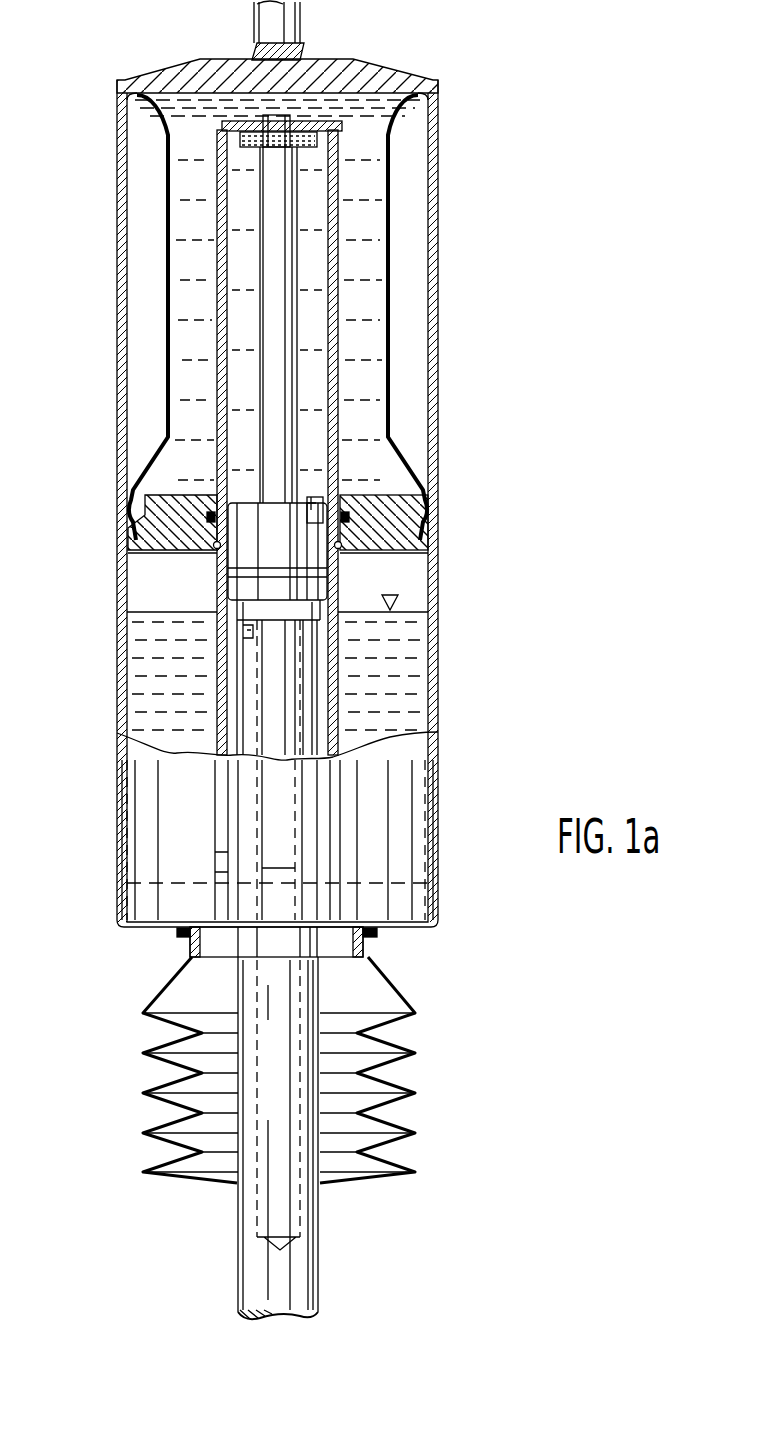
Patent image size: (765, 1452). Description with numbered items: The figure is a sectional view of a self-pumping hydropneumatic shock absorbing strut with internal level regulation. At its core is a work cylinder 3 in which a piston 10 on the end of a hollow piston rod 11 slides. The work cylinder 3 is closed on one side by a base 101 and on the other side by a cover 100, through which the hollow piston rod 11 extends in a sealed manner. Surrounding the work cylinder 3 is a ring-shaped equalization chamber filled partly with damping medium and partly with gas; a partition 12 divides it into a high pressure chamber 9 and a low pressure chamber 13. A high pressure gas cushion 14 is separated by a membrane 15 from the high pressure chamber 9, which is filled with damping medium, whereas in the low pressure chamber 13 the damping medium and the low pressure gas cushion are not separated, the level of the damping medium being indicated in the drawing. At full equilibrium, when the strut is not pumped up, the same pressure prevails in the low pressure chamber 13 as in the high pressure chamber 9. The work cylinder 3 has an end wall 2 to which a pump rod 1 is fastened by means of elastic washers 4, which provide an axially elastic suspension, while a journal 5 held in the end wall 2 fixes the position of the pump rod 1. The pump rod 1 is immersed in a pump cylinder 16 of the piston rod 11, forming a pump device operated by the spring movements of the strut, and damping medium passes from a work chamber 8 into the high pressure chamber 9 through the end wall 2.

The pump rod 1 is at (283, 337).
The end wall 2 is at (309, 92).
The work cylinder 3 is at (220, 280).
The elastic washers 4 is at (311, 130).
The journal 5 is at (268, 113).
The work chamber 8 is at (313, 390).
The high pressure chamber 9 is at (190, 400).
The piston 10 is at (313, 557).
The hollow piston rod 11 is at (300, 1285).
The partition 12 is at (147, 515).
The low pressure chamber 13 is at (410, 695).
The high pressure gas cushion 14 is at (413, 267).
The membrane 15 is at (168, 228).
The pump cylinder 16 is at (307, 997).
The cover 100 is at (367, 942).
The base 101 is at (335, 128).